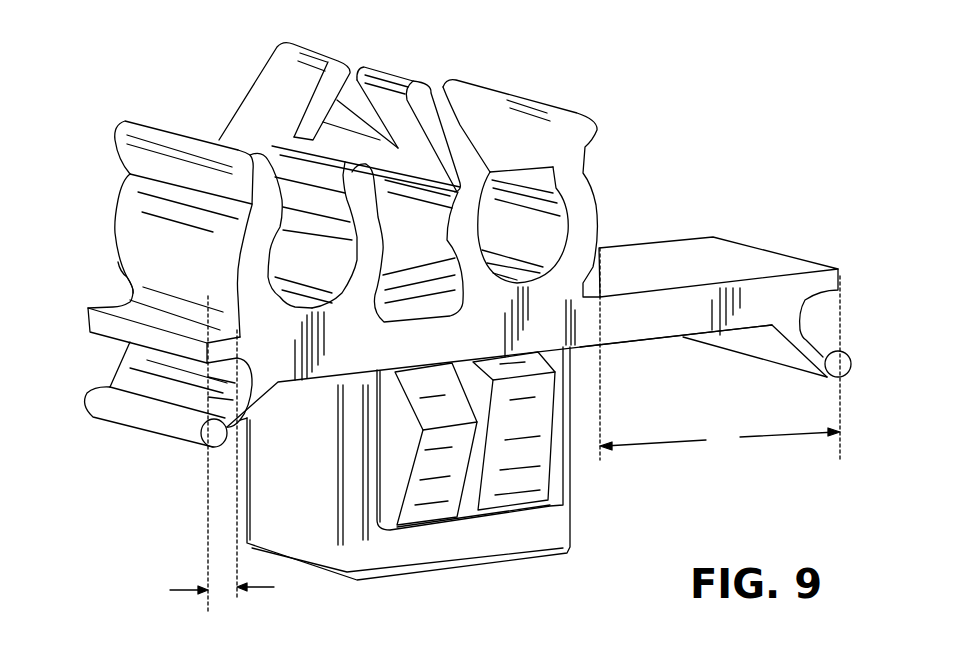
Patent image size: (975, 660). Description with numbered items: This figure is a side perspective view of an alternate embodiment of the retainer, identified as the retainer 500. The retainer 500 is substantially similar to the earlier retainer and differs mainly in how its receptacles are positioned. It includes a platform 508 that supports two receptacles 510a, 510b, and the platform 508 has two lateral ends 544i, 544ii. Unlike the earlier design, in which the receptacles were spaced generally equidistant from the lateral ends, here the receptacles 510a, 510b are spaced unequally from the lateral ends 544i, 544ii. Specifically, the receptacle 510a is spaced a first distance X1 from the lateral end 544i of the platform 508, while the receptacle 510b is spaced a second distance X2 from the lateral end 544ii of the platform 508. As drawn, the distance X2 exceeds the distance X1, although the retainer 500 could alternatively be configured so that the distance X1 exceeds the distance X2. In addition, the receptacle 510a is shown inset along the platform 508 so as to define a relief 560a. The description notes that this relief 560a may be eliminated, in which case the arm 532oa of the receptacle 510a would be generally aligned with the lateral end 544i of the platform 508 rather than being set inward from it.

The retainer 500 is at (724, 62).
The receptacle 510a is at (136, 113).
The receptacle 510b is at (520, 78).
The relief 560a is at (114, 286).
The arm 532oa is at (191, 269).
The lateral end 544i is at (180, 345).
The lateral end 544ii is at (840, 282).
The platform 508 is at (767, 247).
The first distance X1 is at (204, 590).
The second distance X2 is at (720, 354).